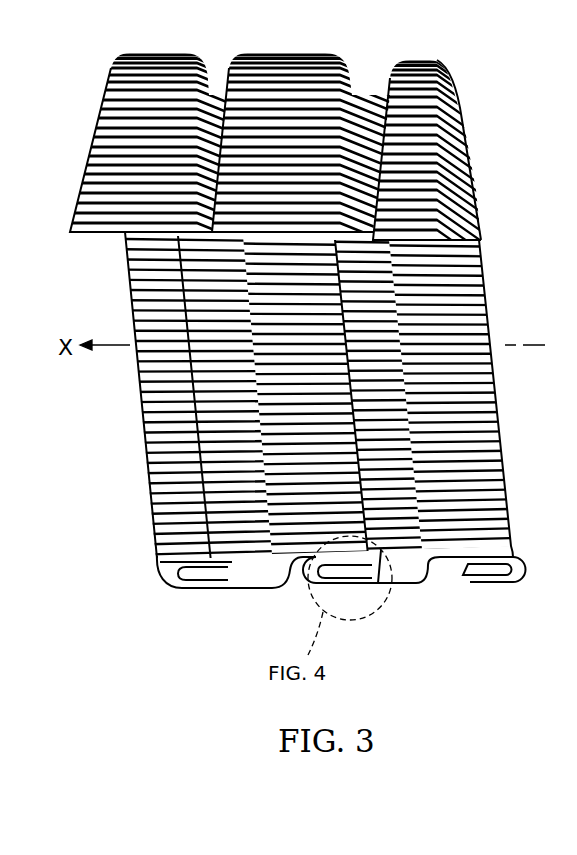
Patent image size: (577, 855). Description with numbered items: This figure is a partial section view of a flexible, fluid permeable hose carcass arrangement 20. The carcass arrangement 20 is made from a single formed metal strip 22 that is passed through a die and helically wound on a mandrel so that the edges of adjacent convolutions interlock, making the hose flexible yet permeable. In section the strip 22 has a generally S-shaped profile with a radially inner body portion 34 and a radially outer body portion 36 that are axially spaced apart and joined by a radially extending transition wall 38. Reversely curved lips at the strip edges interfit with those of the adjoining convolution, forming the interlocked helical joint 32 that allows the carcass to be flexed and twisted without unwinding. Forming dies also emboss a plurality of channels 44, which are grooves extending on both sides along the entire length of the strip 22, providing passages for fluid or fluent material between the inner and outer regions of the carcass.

The carcass arrangement 20 is at (299, 338).
The metal strip 22 is at (527, 567).
The joint 32 is at (350, 612).
The radially inner body portion 34 is at (518, 530).
The radially outer body portion 36 is at (372, 590).
The transition wall 38 is at (426, 583).
The channels 44 is at (498, 403).